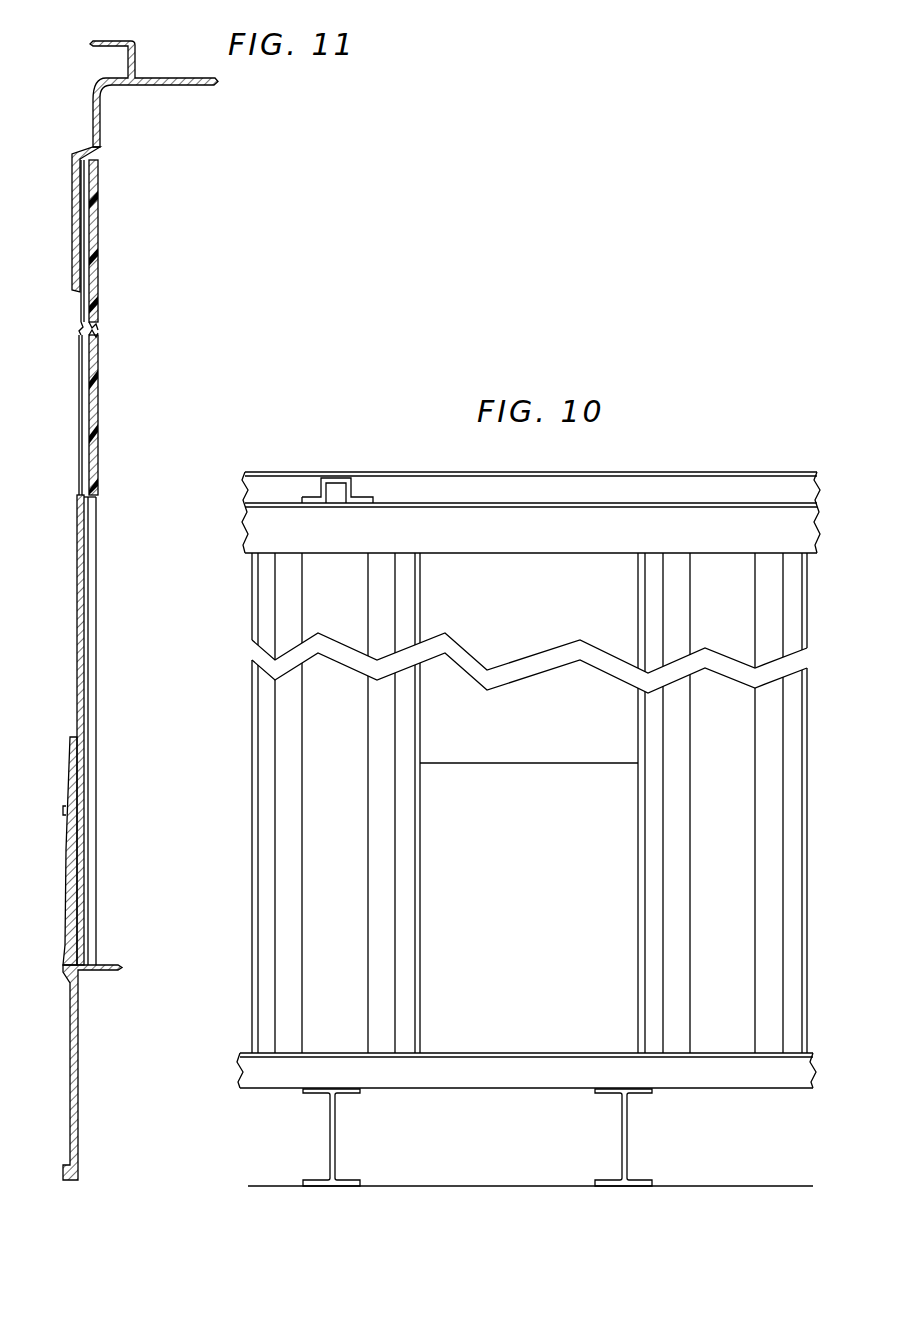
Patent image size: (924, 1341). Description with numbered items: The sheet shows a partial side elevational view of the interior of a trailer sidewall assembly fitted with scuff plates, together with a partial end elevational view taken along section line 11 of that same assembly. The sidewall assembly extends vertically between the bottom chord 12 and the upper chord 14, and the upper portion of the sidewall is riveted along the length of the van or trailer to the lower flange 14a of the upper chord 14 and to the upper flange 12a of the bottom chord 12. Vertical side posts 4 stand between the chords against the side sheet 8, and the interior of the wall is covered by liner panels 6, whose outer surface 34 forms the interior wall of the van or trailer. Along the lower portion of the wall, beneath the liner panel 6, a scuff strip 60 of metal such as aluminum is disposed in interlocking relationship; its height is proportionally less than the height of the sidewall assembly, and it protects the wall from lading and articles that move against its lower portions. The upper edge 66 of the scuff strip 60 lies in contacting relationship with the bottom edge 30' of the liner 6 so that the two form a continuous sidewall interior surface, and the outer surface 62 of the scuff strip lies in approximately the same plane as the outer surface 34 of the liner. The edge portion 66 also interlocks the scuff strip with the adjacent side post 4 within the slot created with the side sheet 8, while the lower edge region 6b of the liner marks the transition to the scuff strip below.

In FIG. 11, the side post 4 is at (106, 385).
In FIG. 10, the side post 4 is at (675, 572).
In FIG. 10, the liner panel 6 is at (613, 592).
In FIG. 11, the lower edge of lining 6b is at (80, 494).
In FIG. 11, the side sheet 8 is at (78, 383).
In FIG. 10, the section line 11- 11 is at (595, 450).
In FIG. 11, the bottom chord 12 is at (71, 1079).
In FIG. 10, the bottom chord 12 is at (676, 1074).
In FIG. 11, the upper flange 12a is at (70, 857).
In FIG. 11, the upper chord 14 is at (94, 121).
In FIG. 10, the upper chord 14 is at (484, 545).
In FIG. 11, the lower flange 14a is at (73, 195).
In FIG. 10, the bottom edge 30' is at (478, 785).
In FIG. 11, the outer surface 34 is at (96, 445).
In FIG. 11, the scuff strip 60 is at (90, 592).
In FIG. 10, the scuff strip 60 is at (540, 980).
In FIG. 11, the outer surface 62 is at (98, 669).
In FIG. 10, the upper edge 66 is at (532, 763).